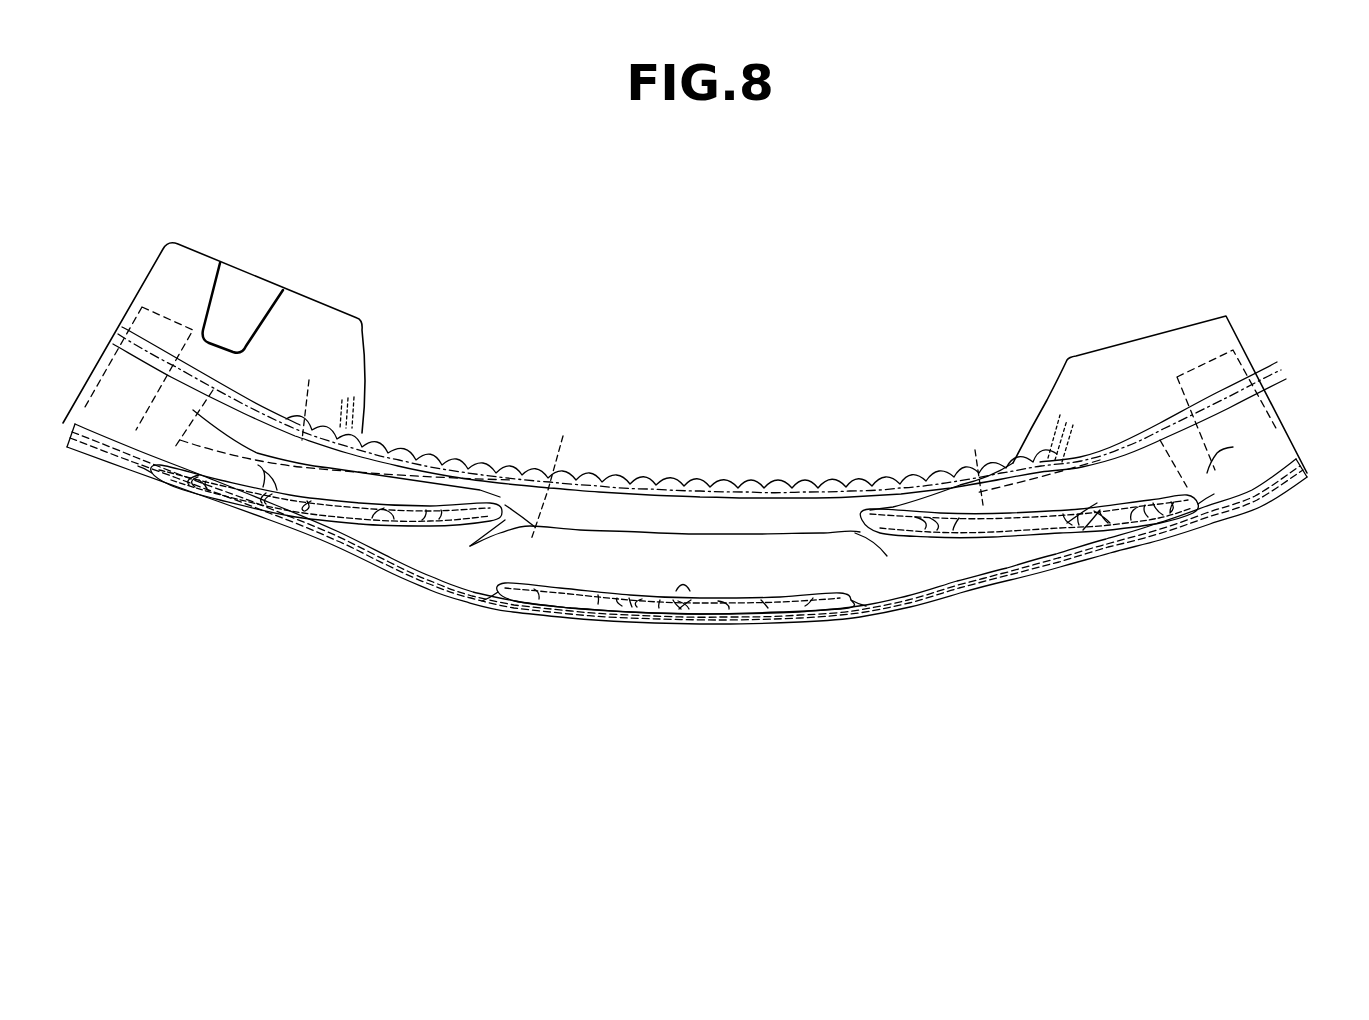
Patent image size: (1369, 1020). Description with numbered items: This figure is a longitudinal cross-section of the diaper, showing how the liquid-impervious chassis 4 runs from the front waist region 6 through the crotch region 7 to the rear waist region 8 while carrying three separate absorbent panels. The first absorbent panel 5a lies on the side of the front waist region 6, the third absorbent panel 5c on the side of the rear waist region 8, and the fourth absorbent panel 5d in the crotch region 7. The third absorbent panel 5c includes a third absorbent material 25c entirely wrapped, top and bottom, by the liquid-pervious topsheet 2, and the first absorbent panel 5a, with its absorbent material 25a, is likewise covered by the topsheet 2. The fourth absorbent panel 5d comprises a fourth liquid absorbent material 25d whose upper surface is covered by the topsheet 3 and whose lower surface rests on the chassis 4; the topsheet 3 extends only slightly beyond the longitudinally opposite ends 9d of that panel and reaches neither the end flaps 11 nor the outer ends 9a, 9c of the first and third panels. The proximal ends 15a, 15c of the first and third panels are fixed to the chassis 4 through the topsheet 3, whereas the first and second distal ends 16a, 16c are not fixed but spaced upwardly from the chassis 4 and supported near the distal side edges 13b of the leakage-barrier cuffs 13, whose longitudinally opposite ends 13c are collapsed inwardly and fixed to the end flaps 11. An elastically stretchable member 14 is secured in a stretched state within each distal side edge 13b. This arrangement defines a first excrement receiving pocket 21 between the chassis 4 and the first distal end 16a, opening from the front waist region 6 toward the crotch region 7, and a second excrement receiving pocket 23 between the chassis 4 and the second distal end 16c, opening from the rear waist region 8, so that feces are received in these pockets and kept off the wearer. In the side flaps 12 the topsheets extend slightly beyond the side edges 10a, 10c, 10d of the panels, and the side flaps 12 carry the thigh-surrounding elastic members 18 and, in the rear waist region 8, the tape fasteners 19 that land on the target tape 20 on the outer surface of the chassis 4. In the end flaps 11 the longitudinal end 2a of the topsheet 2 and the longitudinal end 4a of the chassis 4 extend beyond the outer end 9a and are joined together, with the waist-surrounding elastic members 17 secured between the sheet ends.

The liquid-pervious topsheet 2 is at (677, 487).
The longitudinal end of the topsheet 2a is at (80, 420).
The liquid-pervious topsheet 3 is at (687, 593).
The liquid-impervious chassis 4 is at (918, 600).
The longitudinal end of the chassis 4a is at (92, 452).
The first absorbent panel 5a is at (1013, 538).
The third absorbent panel 5c is at (338, 521).
The fourth absorbent panel 5d is at (649, 602).
The front waist region 6 is at (1228, 212).
The crotch region 7 is at (1028, 290).
The rear waist region 8 is at (193, 202).
The outer end of the first absorbent panel 9a is at (1193, 516).
The outer end of the third absorbent panel 9c is at (176, 480).
The longitudinally opposite ends of the fourth absorbent panel 9d is at (494, 603).
The transversely opposite side edges of the first absorbent panel 10a is at (975, 450).
The second transversely opposite side edges 10c is at (309, 380).
The transversely opposite side edges of the fourth absorbent panel 10d is at (563, 436).
The end flaps 11 is at (1233, 447).
The side flaps 12 is at (1057, 422).
The leakage-barrier cuffs 13 is at (597, 512).
The distal side edge of the cuff 13b is at (668, 510).
The longitudinally opposite ends of the cuff 13c is at (125, 340).
The elastically stretchable member 14 is at (632, 483).
The proximal end of the first absorbent panel 15a is at (1137, 532).
The second proximal end 15c is at (219, 489).
The first distal end 16a is at (898, 518).
The second distal end 16c is at (450, 497).
The waist-surrounding elastic members 17 is at (113, 388).
The thigh-surrounding elastic members 18 is at (357, 404).
The tape fasteners 19 is at (243, 285).
The target tape 20 is at (1090, 577).
The first excrement receiving pocket 21 is at (865, 545).
The second excrement receiving pocket 23 is at (514, 492).
The rear pad upper seam 25a is at (1051, 548).
The third absorbent material 25c is at (303, 528).
The fourth liquid absorbent material 25d is at (606, 605).